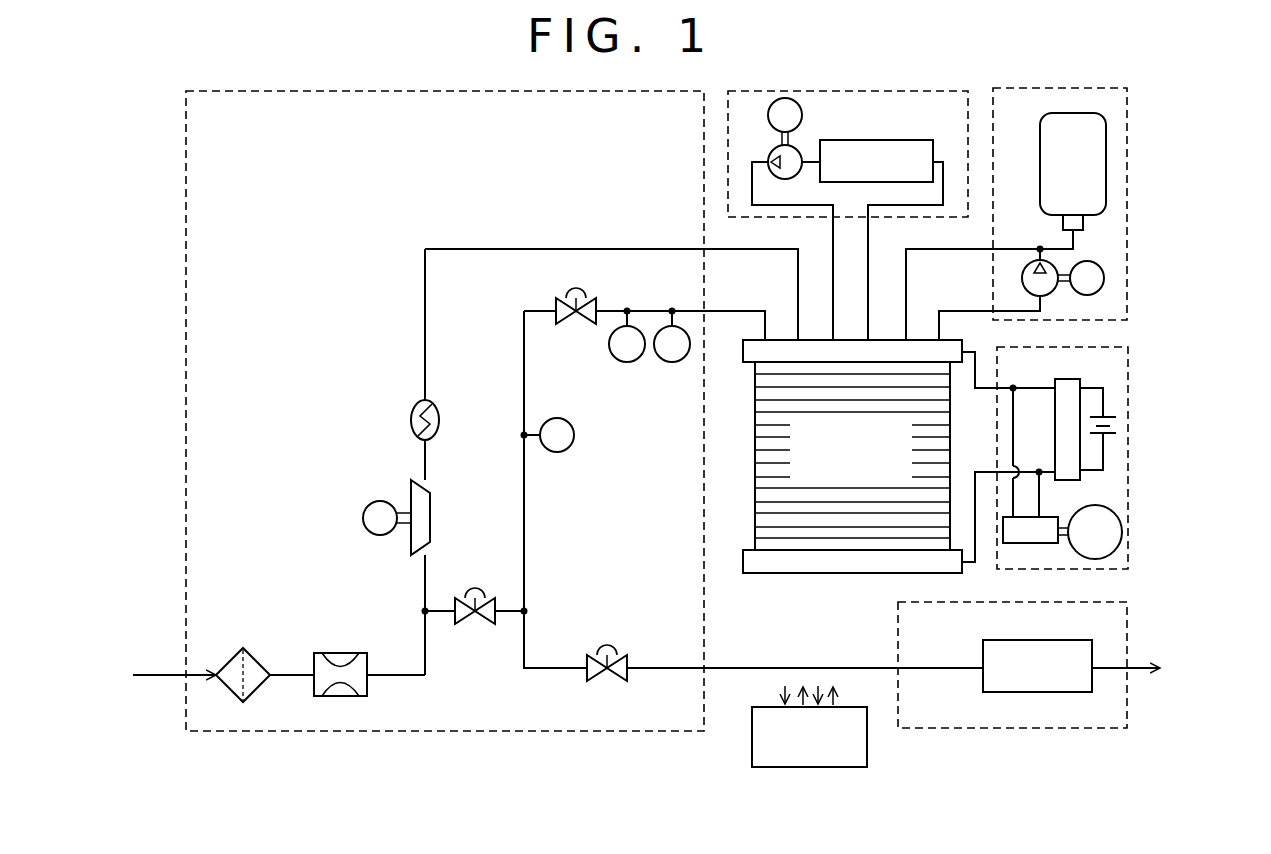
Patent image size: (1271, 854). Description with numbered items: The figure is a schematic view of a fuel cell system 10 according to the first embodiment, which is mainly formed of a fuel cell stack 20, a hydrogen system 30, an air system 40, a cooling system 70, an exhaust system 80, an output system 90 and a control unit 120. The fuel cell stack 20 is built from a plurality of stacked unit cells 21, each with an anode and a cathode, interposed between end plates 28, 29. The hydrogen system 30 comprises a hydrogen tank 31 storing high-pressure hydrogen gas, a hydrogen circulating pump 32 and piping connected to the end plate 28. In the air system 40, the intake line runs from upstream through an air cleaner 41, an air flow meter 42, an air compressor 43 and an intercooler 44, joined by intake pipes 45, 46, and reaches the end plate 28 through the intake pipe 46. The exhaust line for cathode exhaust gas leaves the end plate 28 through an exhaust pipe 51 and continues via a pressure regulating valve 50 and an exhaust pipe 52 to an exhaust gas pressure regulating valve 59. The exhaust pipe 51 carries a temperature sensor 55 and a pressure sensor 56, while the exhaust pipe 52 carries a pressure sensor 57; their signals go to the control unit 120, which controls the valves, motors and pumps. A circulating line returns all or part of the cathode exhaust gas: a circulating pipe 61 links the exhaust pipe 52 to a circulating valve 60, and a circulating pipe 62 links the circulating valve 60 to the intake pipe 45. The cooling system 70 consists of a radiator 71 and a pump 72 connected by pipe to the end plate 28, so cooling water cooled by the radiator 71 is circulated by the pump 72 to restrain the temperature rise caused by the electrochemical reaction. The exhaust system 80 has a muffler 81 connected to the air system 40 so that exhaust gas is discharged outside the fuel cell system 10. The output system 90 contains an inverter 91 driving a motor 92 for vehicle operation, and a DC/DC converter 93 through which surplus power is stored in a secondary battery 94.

The fuel cell system 10 is at (1170, 149).
The fuel cell stack 20 is at (834, 490).
The unit cells 21 is at (757, 494).
The end plate 28 is at (740, 351).
The end plate 29 is at (745, 560).
The hydrogen system 30 is at (1016, 189).
The hydrogen tank 31 is at (1040, 160).
The hydrogen circulating pump 32 is at (1054, 291).
The air system 40 is at (465, 399).
The air cleaner 41 is at (258, 660).
The air flow meter 42 is at (323, 653).
The air compressor 43 is at (410, 488).
The intercooler 44 is at (410, 418).
The intake pipe 45 is at (423, 608).
The intake pipe 46 is at (631, 248).
The pressure regulating valve 50 is at (556, 305).
The exhaust pipe 51 is at (683, 309).
The exhaust pipe 52 is at (527, 548).
The temperature sensor 55 is at (672, 362).
The pressure sensor 56 is at (627, 362).
The pressure sensor 57 is at (575, 446).
The exhaust gas pressure regulating valve 59 is at (625, 661).
The circulating valve 60 is at (462, 596).
The circulating pipe 61 is at (504, 614).
The circulating pipe 62 is at (443, 614).
The cooling system 70 is at (848, 203).
The radiator 71 is at (885, 140).
The pump 72 is at (800, 146).
The exhaust system 80 is at (893, 682).
The muffler 81 is at (1028, 640).
The output system 90 is at (1096, 460).
The inverter 91 is at (1020, 544).
The motor 92 is at (1085, 508).
The DC/DC converter 93 is at (1053, 380).
The secondary battery 94 is at (1104, 413).
The control unit 120 is at (752, 745).